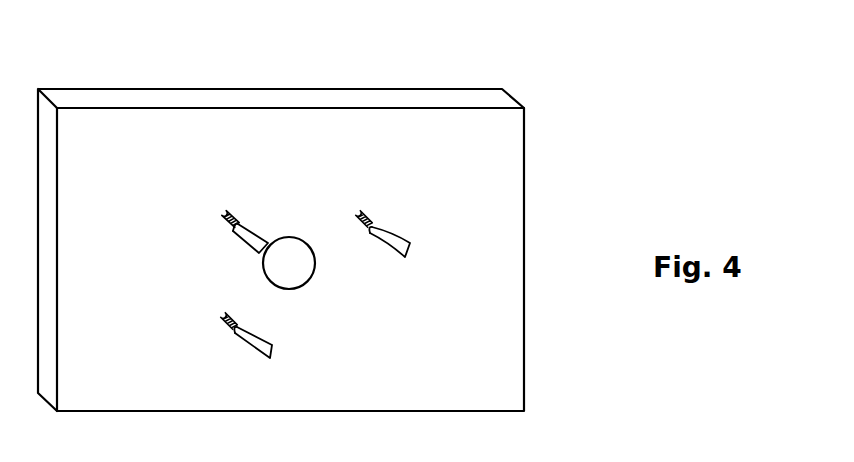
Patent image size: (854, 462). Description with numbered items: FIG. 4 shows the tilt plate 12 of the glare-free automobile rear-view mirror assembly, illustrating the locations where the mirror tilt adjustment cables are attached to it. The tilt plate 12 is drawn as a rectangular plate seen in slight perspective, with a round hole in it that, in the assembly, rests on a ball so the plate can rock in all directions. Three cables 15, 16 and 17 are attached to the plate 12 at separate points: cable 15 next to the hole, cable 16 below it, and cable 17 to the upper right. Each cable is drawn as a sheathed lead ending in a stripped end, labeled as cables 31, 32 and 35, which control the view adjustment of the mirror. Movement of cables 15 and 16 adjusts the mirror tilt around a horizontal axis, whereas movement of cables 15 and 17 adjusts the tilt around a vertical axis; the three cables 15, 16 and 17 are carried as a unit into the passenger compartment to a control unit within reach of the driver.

The tilt plate 12 is at (524, 152).
The cable 15 is at (257, 235).
The cable 16 is at (268, 345).
The cable 17 is at (400, 238).
The cable 31 is at (232, 223).
The cable 32 is at (228, 327).
The cable 35 is at (367, 213).